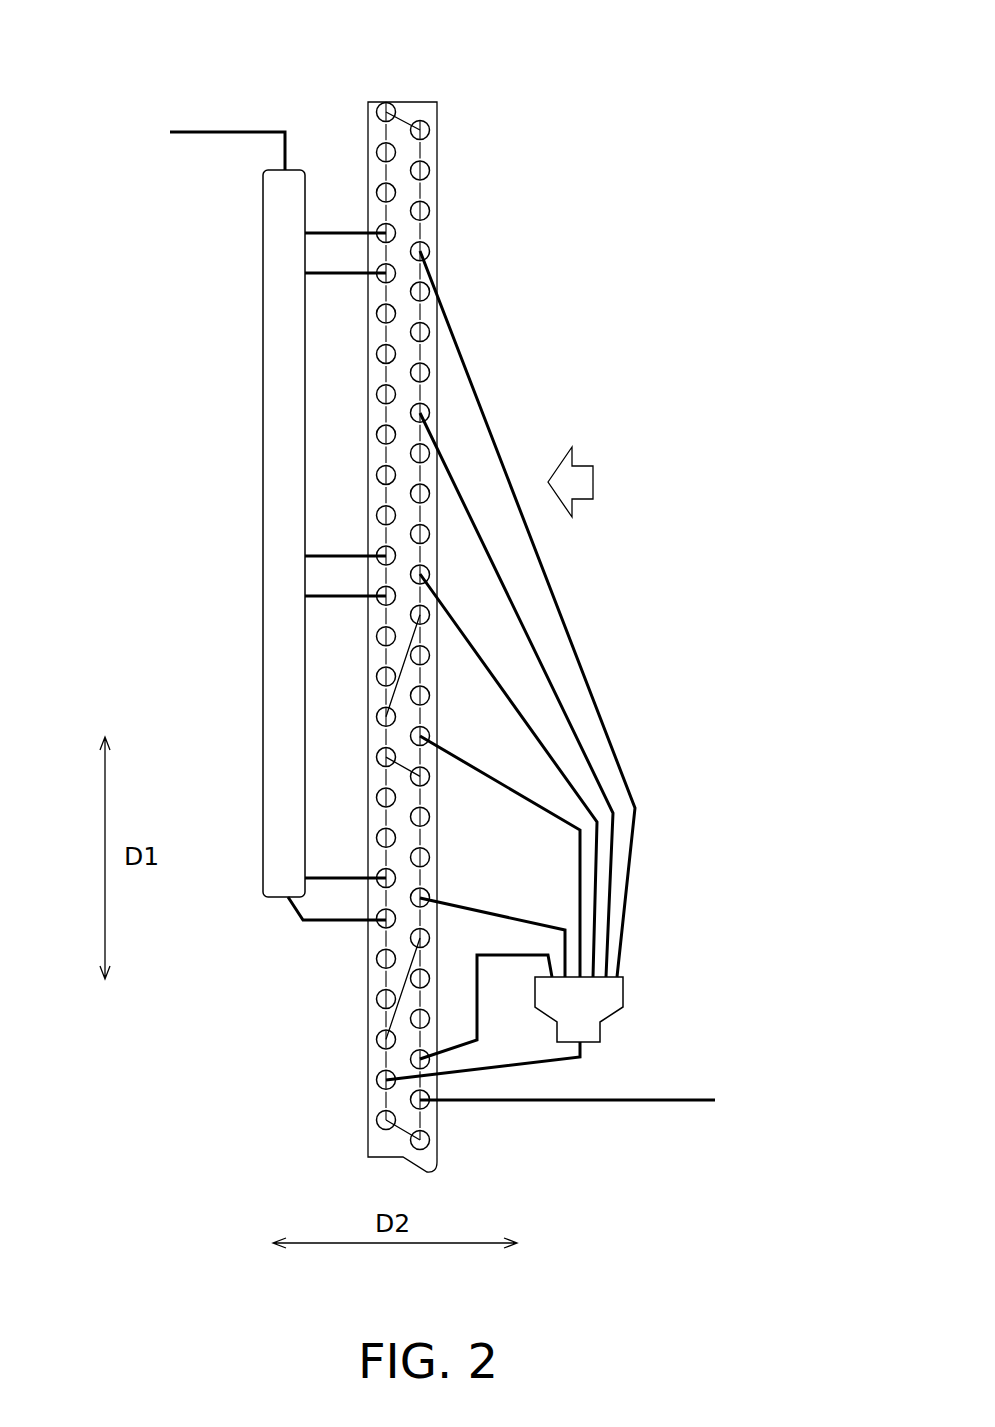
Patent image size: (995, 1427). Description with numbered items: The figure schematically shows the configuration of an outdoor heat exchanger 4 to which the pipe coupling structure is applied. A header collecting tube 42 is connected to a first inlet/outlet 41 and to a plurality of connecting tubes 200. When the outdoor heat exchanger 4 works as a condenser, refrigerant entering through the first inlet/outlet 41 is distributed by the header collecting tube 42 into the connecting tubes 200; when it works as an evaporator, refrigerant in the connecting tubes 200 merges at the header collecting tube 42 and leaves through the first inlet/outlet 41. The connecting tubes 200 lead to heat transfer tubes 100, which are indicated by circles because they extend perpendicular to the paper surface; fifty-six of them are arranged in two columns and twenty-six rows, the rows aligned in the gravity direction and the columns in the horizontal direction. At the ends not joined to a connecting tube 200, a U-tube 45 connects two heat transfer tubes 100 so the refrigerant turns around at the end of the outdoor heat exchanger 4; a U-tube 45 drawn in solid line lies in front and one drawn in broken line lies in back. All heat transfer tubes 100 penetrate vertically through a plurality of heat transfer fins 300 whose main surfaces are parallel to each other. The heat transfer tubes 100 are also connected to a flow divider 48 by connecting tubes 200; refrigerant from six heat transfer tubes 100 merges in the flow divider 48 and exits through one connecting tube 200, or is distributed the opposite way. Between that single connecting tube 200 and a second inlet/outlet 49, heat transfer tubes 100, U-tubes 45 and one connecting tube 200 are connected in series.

The outdoor heat exchanger 4 is at (526, 270).
The first inlet/outlet 41 is at (216, 131).
The header collecting tube 42 is at (263, 571).
The U-tube 45 is at (421, 190).
The flow divider 48 is at (625, 990).
The second inlet/outlet 49 is at (665, 1103).
The heat transfer tube 100 is at (376, 104).
The connecting tube 200 is at (330, 232).
The heat transfer fin 300 is at (432, 108).